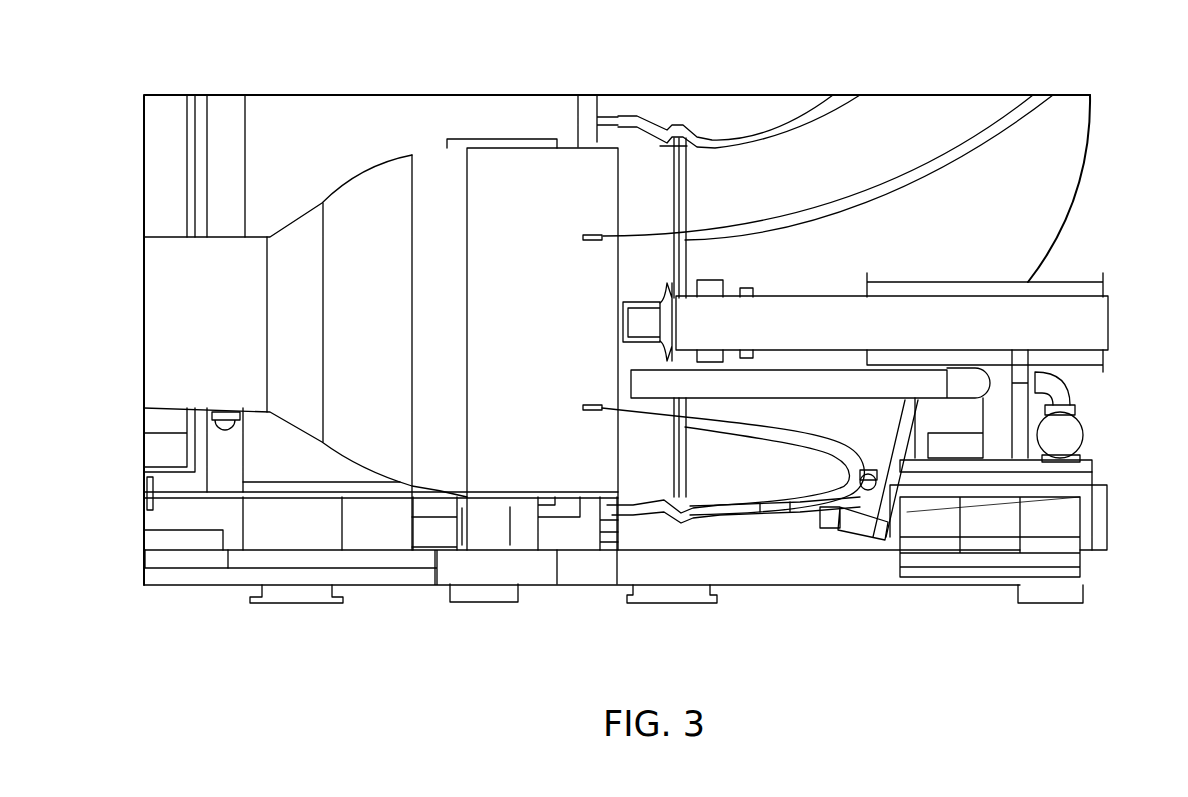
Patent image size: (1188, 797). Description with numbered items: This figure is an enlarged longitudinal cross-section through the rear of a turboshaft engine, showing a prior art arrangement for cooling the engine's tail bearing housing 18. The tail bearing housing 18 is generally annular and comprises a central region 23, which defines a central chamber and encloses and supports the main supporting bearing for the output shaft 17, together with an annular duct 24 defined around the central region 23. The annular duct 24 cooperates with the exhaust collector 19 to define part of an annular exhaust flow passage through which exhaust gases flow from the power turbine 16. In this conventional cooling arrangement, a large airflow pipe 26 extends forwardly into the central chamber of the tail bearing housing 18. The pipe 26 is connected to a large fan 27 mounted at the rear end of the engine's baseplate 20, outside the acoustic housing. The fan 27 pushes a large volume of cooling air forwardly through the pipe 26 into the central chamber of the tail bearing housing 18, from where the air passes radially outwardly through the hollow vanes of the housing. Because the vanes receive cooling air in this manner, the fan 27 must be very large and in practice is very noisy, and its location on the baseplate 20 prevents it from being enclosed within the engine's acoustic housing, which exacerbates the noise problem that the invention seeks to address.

The power turbine 16 is at (370, 225).
The output shaft 17 is at (1072, 310).
The tail bearing housing 18 is at (543, 178).
The exhaust collector 19 is at (913, 113).
The baseplate 20 is at (290, 568).
The central region 23 is at (622, 412).
The annular duct 24 is at (646, 478).
The airflow pipe 26 is at (838, 386).
The fan 27 is at (952, 411).